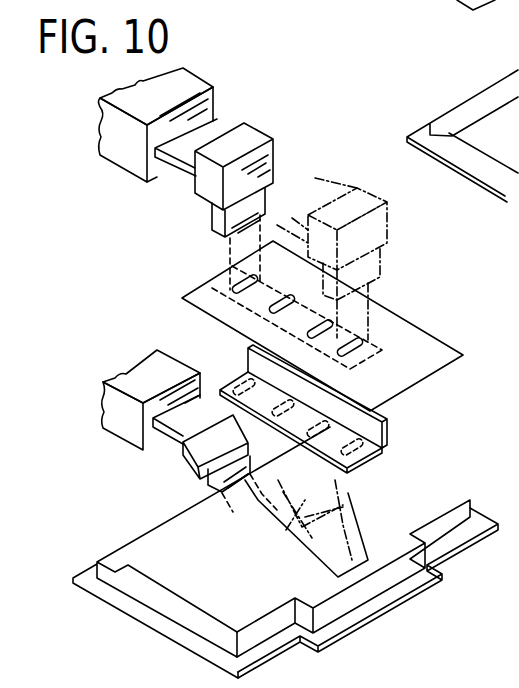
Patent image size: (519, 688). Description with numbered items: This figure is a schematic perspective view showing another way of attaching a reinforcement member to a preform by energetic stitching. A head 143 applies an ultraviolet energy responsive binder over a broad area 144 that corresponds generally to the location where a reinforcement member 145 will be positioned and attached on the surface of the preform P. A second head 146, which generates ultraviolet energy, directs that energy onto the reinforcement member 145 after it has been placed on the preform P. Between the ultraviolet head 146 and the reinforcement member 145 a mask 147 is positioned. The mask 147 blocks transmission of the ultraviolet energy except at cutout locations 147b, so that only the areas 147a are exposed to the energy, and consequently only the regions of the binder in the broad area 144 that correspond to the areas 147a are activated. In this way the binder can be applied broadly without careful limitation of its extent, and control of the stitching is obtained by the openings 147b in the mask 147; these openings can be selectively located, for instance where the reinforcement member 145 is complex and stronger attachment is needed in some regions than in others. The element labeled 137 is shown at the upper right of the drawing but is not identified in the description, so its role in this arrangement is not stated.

The connector housing 137 is at (518, 30).
The head 143 is at (193, 462).
The broad area 144 is at (348, 560).
The reinforcement member 145 is at (385, 427).
The head 146 is at (268, 165).
The mask 147 is at (314, 326).
The areas 147a is at (380, 460).
The cutout locations 147b is at (276, 311).
The preform P is at (462, 488).